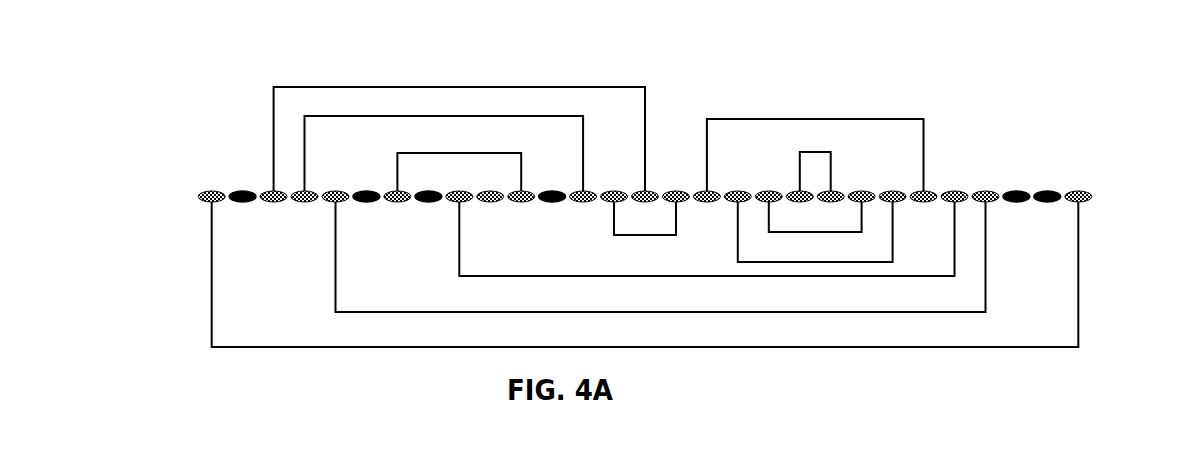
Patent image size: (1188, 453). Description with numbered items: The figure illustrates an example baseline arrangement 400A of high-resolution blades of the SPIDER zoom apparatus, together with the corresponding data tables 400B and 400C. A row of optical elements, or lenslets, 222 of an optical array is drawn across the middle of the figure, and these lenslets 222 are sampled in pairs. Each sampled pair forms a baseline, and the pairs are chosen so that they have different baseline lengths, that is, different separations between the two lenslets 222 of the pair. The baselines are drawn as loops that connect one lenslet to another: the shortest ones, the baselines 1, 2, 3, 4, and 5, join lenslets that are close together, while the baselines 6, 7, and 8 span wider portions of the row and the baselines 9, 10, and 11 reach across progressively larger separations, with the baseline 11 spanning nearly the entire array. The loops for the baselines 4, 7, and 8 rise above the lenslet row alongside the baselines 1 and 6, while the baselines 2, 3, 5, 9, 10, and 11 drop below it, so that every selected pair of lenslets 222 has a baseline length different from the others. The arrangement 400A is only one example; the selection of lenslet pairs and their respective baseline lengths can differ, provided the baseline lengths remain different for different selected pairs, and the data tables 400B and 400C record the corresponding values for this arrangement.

The baseline 1 is at (828, 170).
The baseline 2 is at (673, 218).
The baseline 3 is at (858, 213).
The baseline 4 is at (517, 167).
The baseline 5 is at (890, 242).
The baseline 6 is at (922, 145).
The baseline 7 is at (578, 132).
The baseline 8 is at (640, 120).
The baseline 9 is at (947, 240).
The baseline 10 is at (978, 288).
The baseline 11 is at (1073, 302).
The optical element 222 is at (977, 193).
The baseline arrangement 400A is at (165, 47).
The data table 400B is at (165, 413).
The data table 400C is at (816, 415).